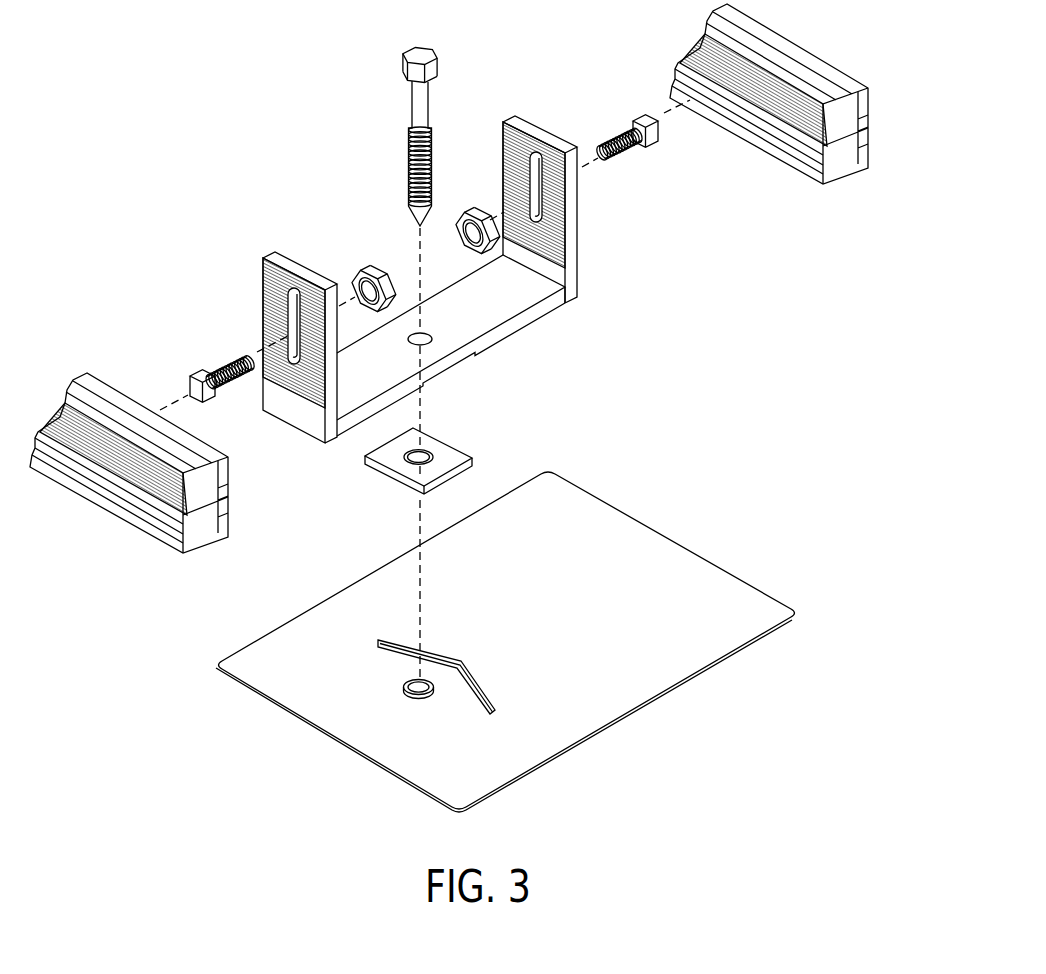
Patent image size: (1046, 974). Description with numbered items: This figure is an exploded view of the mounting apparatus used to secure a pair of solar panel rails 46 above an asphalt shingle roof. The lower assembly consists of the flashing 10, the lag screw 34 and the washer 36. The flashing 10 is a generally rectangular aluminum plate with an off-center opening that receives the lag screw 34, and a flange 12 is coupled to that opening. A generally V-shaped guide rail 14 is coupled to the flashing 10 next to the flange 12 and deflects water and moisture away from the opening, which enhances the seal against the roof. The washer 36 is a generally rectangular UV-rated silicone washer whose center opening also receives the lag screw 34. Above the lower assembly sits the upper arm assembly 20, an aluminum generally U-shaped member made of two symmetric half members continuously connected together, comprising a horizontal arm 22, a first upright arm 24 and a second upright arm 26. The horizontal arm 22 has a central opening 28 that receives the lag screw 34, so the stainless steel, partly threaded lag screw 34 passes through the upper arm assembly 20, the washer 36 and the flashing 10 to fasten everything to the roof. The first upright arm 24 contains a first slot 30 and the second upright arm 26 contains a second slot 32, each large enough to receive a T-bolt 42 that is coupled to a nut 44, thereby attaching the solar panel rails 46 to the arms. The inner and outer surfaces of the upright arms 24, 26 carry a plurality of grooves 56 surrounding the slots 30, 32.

The flashing 10 is at (733, 587).
The flange 12 is at (411, 698).
The guide rail 14 is at (483, 687).
The upper arm assembly 20 is at (416, 251).
The horizontal arm 22 is at (451, 345).
The first upright arm 24 is at (274, 318).
The second upright arm 26 is at (515, 181).
The central opening 28 is at (423, 340).
The first slot 30 is at (265, 308).
The second slot 32 is at (530, 180).
The lag screw 34 is at (417, 93).
The washer 36 is at (470, 460).
The T-bolt 42 is at (202, 372).
The nut 44 is at (375, 272).
The solar panel rail 46 is at (190, 548).
The grooves 56 is at (267, 275).